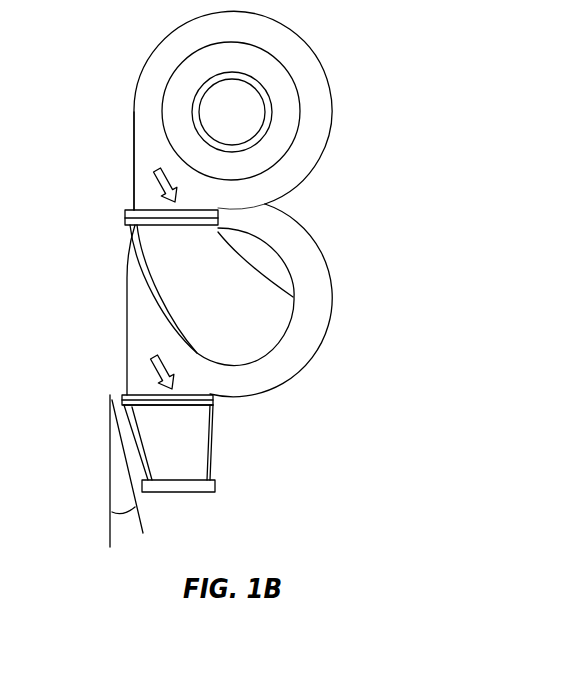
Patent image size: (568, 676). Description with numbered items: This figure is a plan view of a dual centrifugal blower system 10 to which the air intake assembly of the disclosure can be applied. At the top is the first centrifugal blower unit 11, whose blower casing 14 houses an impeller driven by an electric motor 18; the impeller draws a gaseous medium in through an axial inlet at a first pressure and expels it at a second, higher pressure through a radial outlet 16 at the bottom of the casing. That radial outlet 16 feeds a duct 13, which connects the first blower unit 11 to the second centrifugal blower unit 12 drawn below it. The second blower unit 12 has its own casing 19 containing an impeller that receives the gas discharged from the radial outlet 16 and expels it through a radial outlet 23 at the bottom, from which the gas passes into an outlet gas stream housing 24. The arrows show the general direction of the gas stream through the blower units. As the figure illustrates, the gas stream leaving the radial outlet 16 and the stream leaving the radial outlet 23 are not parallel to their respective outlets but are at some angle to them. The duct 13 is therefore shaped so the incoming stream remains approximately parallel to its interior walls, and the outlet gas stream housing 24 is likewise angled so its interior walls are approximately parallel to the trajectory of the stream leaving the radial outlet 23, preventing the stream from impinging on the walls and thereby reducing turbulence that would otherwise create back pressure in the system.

The dual centrifugal blower system 10 is at (93, 75).
The first centrifugal blower unit 11 is at (133, 138).
The blower casing 14 is at (133, 187).
The electric motor 18 is at (235, 103).
The radial outlet 16 is at (137, 227).
The second centrifugal blower unit 12 is at (127, 320).
The duct 13 is at (223, 302).
The casing 19 is at (127, 377).
The radial outlet 23 is at (207, 408).
The outlet gas stream housing 24 is at (192, 453).